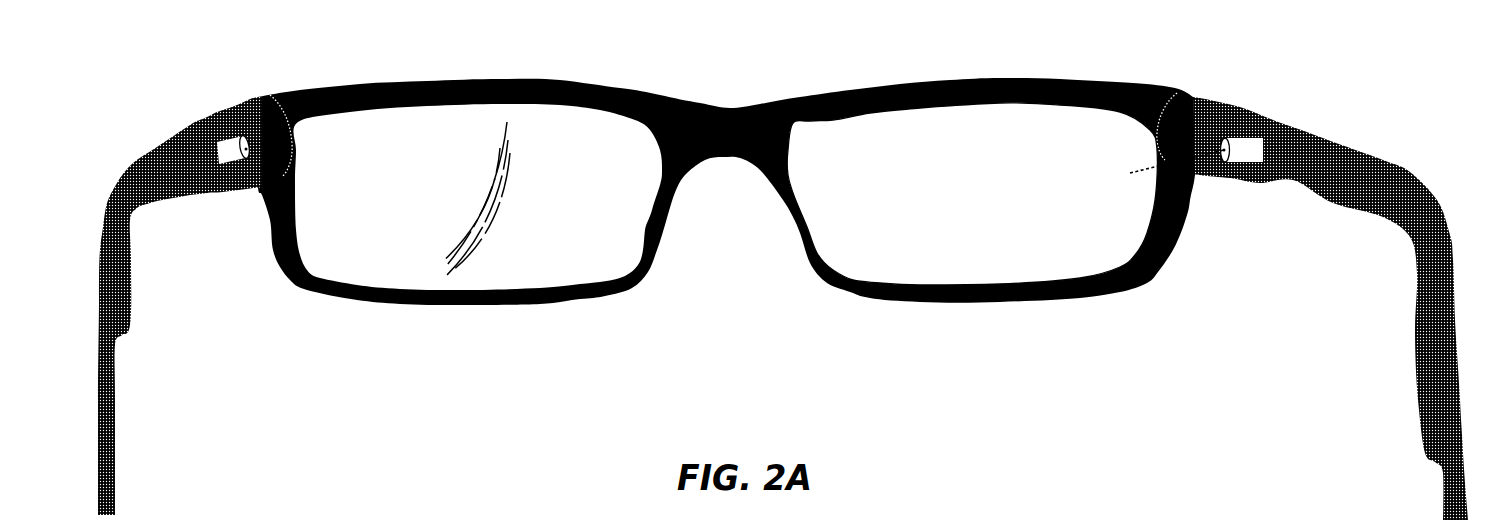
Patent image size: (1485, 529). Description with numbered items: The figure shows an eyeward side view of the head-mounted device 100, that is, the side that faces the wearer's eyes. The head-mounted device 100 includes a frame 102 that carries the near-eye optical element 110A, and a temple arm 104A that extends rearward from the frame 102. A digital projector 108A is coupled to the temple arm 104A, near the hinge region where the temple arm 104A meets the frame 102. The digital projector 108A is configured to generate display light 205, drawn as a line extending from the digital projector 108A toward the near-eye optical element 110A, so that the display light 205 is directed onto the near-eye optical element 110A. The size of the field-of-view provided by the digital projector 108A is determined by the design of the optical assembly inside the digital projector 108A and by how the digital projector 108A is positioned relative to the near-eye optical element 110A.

The head-mounted device 100 is at (741, 78).
The frame 102 is at (1137, 83).
The temple arm 104A is at (1373, 172).
The digital projector 108A is at (1273, 121).
The near-eye optical element 110A is at (891, 254).
The display light 205 is at (1130, 173).